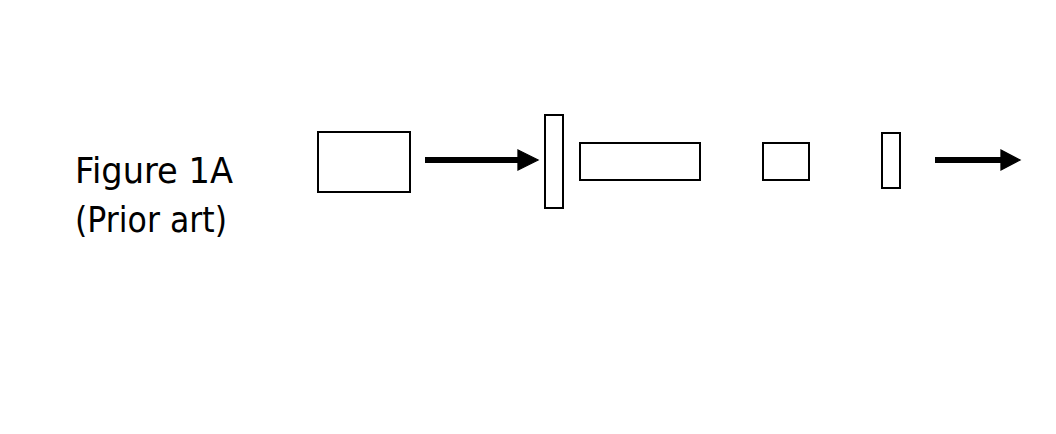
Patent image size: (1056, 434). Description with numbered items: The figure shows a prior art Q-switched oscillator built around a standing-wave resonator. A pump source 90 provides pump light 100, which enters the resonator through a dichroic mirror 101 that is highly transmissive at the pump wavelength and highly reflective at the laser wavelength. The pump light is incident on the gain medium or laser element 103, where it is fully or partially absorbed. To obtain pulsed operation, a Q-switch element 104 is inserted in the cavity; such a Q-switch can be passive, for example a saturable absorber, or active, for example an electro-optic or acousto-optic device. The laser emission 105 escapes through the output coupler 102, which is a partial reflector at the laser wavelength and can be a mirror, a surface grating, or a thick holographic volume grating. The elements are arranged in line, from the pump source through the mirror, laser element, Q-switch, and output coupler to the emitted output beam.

The pump source 90 is at (363, 132).
The pump light 100 is at (465, 157).
The dichroic mirror 101 is at (557, 132).
The gain medium/laser element 103 is at (665, 143).
The Q-switch element 104 is at (793, 143).
The output coupler 102 is at (900, 140).
The laser emission 105 is at (983, 163).